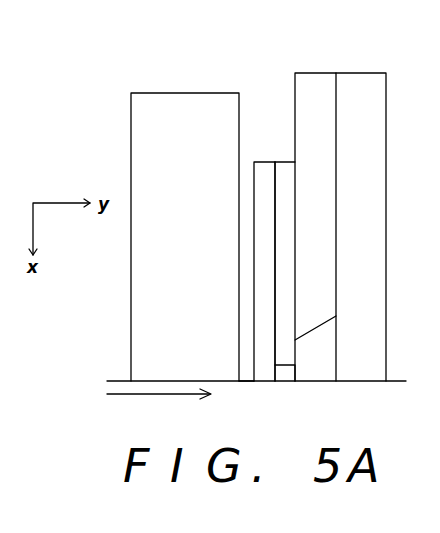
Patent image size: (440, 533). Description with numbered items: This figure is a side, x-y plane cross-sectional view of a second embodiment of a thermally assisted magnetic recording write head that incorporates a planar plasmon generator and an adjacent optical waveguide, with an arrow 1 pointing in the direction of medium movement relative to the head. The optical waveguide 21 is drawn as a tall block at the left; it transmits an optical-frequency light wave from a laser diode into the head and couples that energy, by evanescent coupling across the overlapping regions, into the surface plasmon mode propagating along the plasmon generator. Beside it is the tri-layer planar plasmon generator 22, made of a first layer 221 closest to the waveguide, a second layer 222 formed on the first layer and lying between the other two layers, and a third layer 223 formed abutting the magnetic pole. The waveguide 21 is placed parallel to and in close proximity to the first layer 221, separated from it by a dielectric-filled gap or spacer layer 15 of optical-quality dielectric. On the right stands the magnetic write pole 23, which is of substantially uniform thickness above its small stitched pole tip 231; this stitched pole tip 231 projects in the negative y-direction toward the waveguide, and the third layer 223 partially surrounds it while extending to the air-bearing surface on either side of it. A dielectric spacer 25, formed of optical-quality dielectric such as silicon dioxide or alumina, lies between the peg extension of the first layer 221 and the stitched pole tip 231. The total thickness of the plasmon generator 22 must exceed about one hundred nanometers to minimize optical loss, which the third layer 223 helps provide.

The arrow 1 is at (138, 395).
The dielectric spacer layer 15 is at (247, 368).
The optical waveguide 21 is at (145, 113).
The planar plasmon generator 22 is at (275, 62).
The layer 1 221 is at (263, 173).
The layer 2 222 is at (284, 173).
The layer 3 223 is at (315, 83).
The magnetic write pole 23 is at (362, 85).
The stitched pole tip 231 is at (315, 370).
The dielectric spacer 25 is at (285, 370).